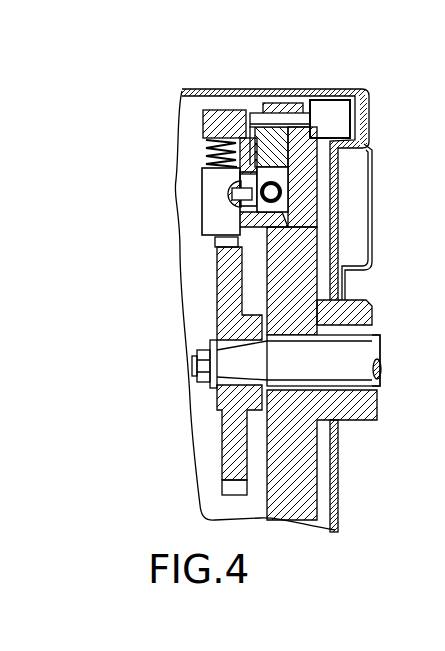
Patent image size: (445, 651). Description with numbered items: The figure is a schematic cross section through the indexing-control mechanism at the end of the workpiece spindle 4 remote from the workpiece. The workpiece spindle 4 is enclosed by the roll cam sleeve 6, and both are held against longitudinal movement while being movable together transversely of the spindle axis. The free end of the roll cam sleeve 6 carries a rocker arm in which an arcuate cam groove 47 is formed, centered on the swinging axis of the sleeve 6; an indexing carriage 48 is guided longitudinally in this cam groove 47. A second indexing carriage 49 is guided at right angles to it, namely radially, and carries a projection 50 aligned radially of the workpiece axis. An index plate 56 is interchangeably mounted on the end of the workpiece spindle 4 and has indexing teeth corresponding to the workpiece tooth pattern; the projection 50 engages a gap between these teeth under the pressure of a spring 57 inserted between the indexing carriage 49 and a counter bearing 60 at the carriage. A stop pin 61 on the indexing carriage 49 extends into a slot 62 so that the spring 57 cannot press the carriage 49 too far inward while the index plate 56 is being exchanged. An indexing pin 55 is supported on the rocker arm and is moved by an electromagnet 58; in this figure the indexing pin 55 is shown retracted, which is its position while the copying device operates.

The workpiece spindle 4 is at (363, 362).
The roll cam sleeve 6 is at (360, 315).
The arcuate cam groove 47 is at (270, 226).
The indexing carriage 48 is at (297, 153).
The indexing carriage 49 is at (215, 222).
The projection 50 is at (215, 243).
The indexing pin 55 is at (281, 118).
The index plate 56 is at (224, 297).
The spring 57 is at (212, 153).
The electromagnet 58 is at (337, 104).
The counter bearing 60 is at (225, 110).
The stop pin 61 is at (236, 193).
The slot 62 is at (265, 207).